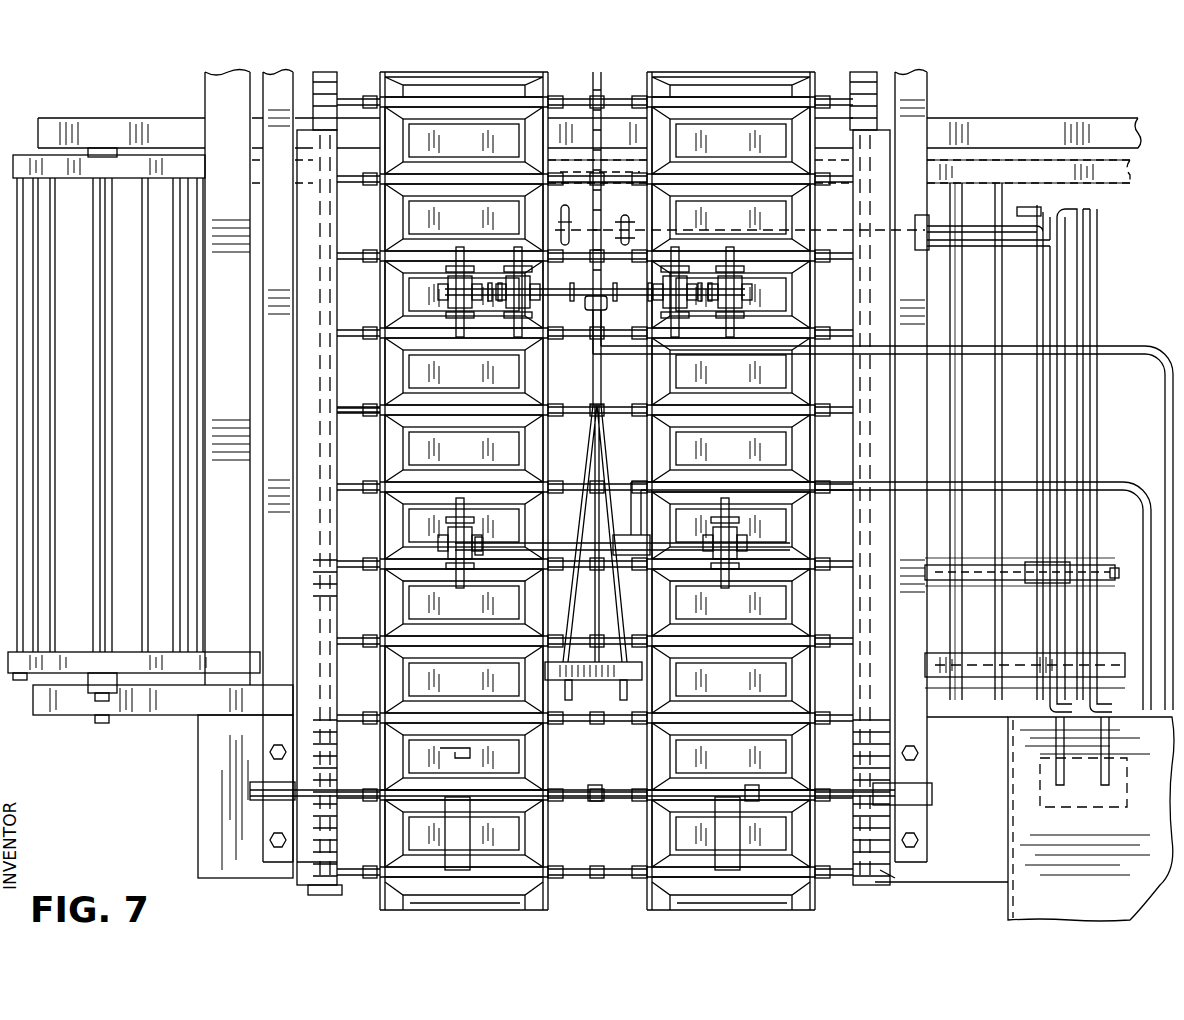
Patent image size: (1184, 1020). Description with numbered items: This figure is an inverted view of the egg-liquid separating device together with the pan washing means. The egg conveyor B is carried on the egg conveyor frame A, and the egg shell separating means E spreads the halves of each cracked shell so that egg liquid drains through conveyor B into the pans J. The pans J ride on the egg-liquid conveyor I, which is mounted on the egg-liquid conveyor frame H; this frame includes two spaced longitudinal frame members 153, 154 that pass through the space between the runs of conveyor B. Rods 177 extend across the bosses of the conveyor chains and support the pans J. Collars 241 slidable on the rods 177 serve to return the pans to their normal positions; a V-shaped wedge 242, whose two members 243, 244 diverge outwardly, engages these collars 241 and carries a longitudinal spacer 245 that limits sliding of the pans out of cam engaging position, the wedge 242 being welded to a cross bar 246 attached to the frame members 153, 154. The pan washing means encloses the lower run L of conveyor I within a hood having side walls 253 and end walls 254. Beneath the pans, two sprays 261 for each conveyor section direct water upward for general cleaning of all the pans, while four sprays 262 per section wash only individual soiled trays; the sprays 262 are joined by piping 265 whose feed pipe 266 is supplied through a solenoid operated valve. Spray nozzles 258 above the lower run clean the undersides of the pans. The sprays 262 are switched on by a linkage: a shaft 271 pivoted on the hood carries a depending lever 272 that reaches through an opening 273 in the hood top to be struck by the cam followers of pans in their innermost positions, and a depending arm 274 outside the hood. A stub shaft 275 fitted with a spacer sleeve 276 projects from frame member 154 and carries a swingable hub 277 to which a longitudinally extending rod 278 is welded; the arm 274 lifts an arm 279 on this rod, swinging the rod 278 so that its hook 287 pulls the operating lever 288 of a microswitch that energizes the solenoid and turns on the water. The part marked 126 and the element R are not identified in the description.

The housing panel 126 is at (1005, 908).
The longitudinal frame member 153 is at (270, 737).
The longitudinal frame member 154 is at (920, 458).
The rods 177 is at (352, 485).
The collars 241 is at (637, 410).
The V-shaped wedge 242 is at (610, 470).
The wedge member 243 is at (575, 600).
The wedge member 244 is at (665, 600).
The longitudinal spacer 245 is at (590, 418).
The cross bar 246 is at (610, 690).
The side walls 253 is at (563, 541).
The end walls 254 is at (1130, 482).
The spray nozzle 258 is at (1108, 826).
The sprays 261 is at (458, 578).
The sprays 262 is at (515, 248).
The piping 265 is at (590, 394).
The feed pipe 266 is at (1143, 357).
The shaft 271 is at (988, 255).
The depending lever 272 is at (565, 238).
The opening 273 is at (600, 310).
The depending arm 274 is at (1048, 237).
The stub shaft 275 is at (980, 563).
The spacer sleeve 276 is at (987, 586).
The hub 277 is at (1105, 565).
The longitudinally extending rod 278 is at (1060, 346).
The arm 279 is at (1030, 205).
The hook 287 is at (1090, 706).
The operating lever 288 is at (1050, 712).
The egg conveyor frame A is at (190, 730).
The egg conveyor B is at (75, 692).
The egg shell separating means E is at (615, 878).
The egg-liquid conveyor frame H is at (932, 773).
The egg-liquid conveyor I is at (300, 822).
The pans J is at (495, 815).
The lower run L is at (900, 880).
The chain rail R is at (300, 868).